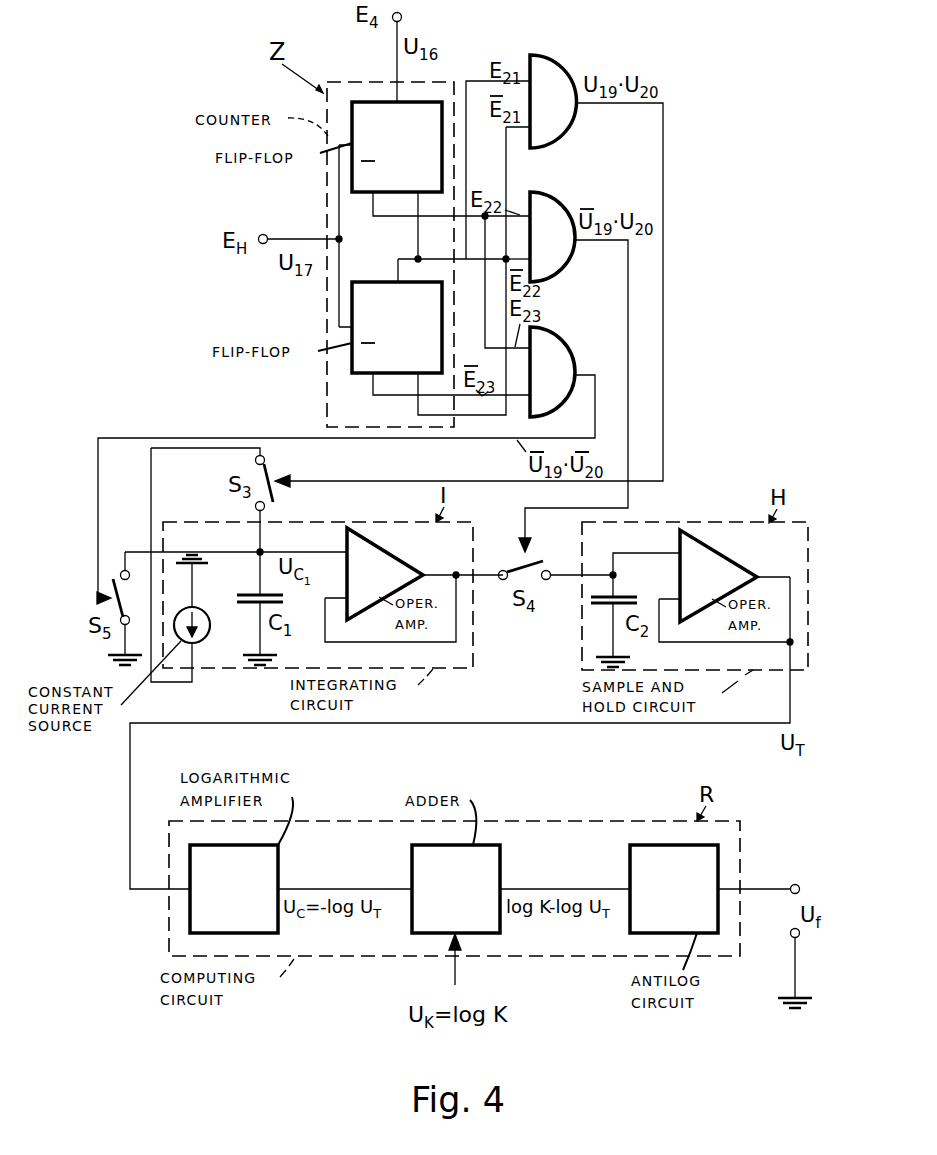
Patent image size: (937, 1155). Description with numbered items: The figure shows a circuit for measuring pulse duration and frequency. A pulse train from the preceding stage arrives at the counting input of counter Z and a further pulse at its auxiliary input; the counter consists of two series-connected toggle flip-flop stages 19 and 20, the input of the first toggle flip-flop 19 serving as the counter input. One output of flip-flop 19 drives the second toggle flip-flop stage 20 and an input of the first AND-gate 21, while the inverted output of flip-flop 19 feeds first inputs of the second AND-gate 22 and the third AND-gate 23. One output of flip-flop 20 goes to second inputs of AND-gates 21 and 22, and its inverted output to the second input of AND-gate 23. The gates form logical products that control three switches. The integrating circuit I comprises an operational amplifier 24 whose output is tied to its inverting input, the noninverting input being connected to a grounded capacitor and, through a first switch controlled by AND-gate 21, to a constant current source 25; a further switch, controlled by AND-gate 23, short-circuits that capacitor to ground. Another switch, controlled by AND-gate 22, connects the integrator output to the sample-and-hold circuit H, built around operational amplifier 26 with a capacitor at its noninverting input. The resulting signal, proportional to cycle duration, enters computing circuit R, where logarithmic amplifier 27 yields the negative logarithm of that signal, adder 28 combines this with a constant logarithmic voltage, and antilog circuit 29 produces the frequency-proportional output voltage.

The first toggle flip-flop stage 19 is at (397, 147).
The second toggle flip-flop stage 20 is at (397, 328).
The first AND-gate 21 is at (553, 101).
The second AND-gate 22 is at (552, 237).
The third AND-gate 23 is at (552, 372).
The operational amplifier 24 is at (414, 585).
The constant current source 25 is at (196, 565).
The operational amplifier 26 is at (726, 587).
The logarithmic amplifier 27 is at (234, 889).
The adder 28 is at (456, 889).
The antilog circuit 29 is at (674, 889).